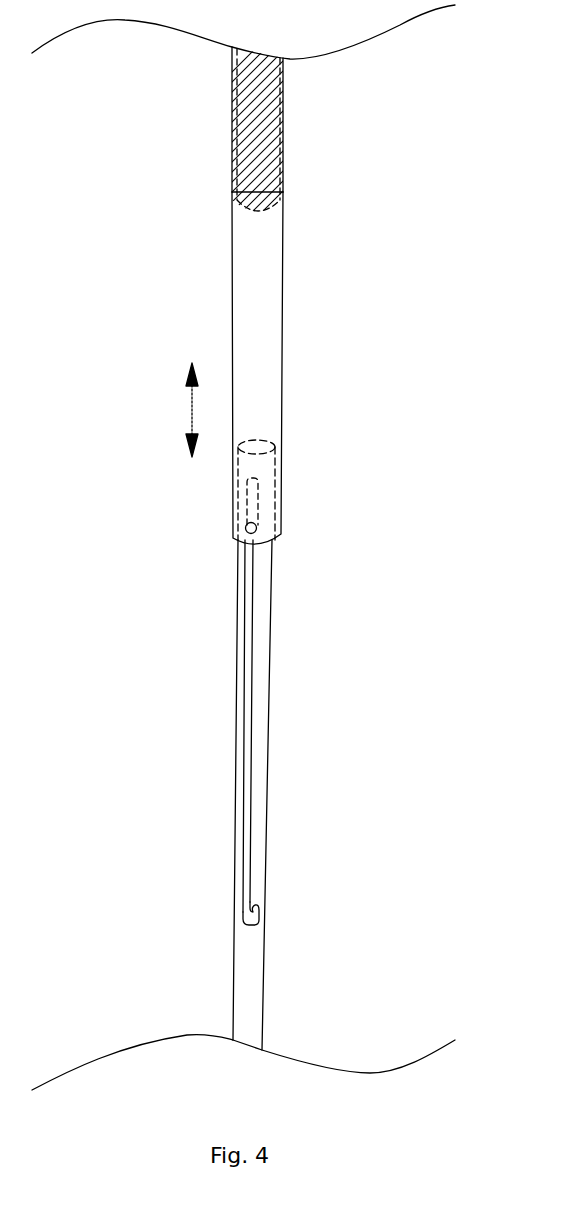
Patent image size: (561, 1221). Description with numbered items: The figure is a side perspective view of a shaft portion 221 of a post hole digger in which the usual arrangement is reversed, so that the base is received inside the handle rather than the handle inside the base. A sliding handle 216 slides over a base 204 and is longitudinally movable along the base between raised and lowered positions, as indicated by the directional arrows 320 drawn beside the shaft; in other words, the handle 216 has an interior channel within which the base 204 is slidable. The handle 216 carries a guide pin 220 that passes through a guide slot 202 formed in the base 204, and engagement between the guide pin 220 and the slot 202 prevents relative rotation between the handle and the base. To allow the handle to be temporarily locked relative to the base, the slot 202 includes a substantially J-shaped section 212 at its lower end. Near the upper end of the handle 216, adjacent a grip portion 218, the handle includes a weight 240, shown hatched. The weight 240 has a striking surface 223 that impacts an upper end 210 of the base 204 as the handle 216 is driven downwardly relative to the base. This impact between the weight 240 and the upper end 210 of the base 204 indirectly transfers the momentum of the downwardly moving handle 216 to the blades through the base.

The guide slot 202 is at (243, 773).
The base 204 is at (268, 763).
The upper end of the base 210 is at (256, 446).
The J-shaped section 212 is at (237, 925).
The sliding handle 216 is at (282, 371).
The grip portion 218 is at (283, 145).
The guide pin 220 is at (257, 528).
The shaft portion 221 is at (325, 227).
The striking surface 223 is at (253, 217).
The weight 240 is at (245, 145).
The directional arrows 320 is at (192, 410).